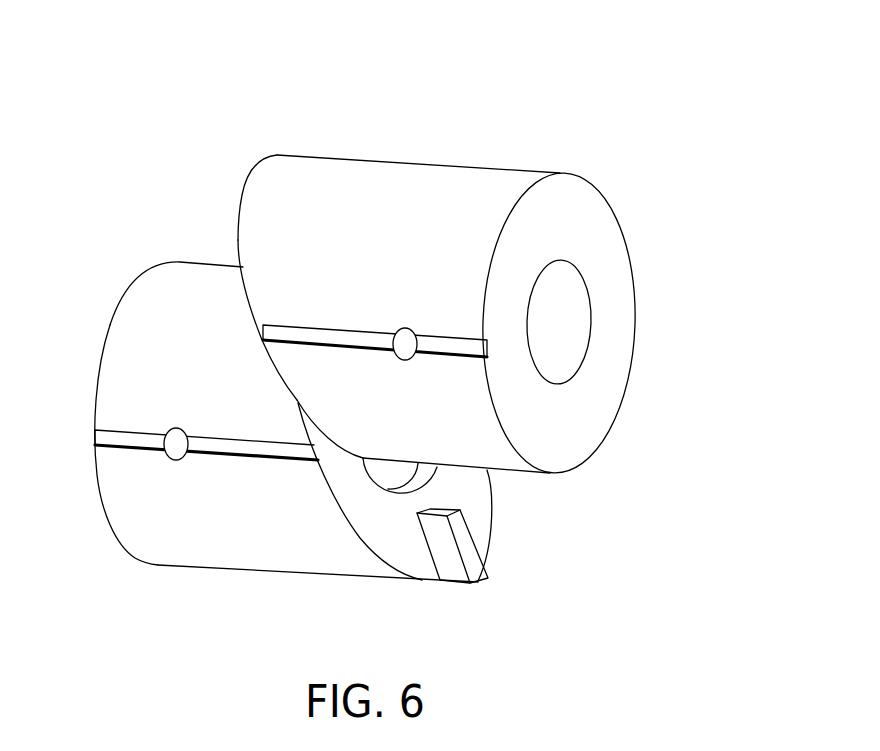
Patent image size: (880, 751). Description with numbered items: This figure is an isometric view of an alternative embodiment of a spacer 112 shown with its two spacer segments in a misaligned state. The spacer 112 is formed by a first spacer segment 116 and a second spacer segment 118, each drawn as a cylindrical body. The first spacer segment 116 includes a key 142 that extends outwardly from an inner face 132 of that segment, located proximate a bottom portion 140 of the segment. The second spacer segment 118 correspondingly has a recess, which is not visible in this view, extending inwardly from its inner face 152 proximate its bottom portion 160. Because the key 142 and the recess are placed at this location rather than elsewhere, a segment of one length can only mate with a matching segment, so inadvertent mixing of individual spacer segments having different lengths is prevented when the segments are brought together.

The spacer 112 is at (382, 104).
The second spacer segment 118 is at (499, 150).
The first spacer segment 116 is at (178, 218).
The inner face 152 is at (245, 193).
The bottom portion 160 is at (523, 472).
The bottom portion 140 is at (109, 518).
The inner face 132 is at (408, 548).
The key 142 is at (480, 578).